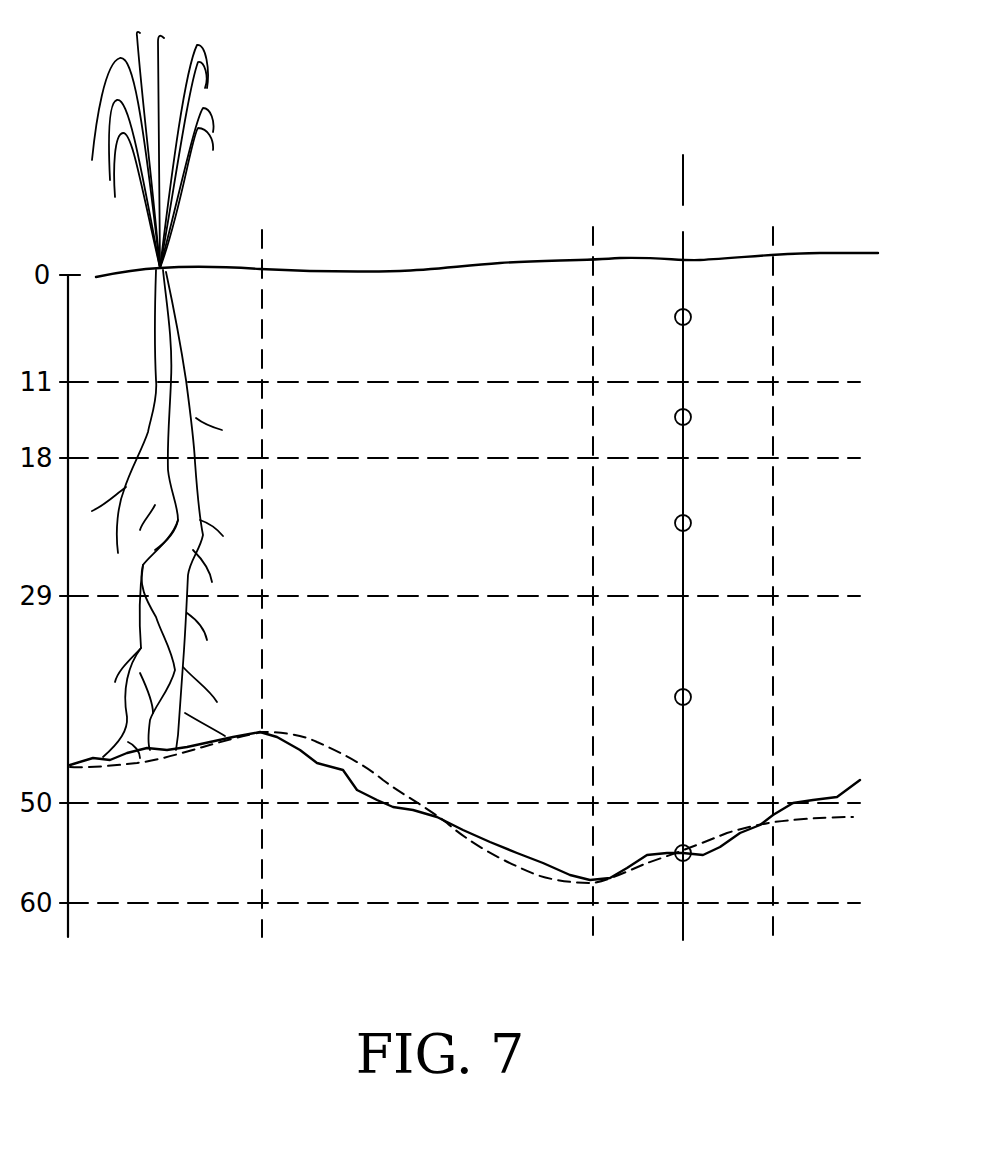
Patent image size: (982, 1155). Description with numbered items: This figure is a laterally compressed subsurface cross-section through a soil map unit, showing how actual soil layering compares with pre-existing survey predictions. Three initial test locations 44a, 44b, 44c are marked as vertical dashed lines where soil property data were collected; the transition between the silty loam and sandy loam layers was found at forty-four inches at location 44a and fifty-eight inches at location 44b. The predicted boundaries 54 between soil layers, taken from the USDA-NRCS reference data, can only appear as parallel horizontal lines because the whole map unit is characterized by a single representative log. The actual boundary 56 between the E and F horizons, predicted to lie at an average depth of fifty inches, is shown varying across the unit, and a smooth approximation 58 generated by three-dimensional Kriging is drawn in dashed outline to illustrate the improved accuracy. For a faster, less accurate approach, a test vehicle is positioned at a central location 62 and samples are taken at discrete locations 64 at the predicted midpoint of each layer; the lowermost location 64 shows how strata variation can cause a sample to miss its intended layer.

The initial test location 44a is at (262, 926).
The initial test location 44b is at (592, 245).
The initial test location 44c is at (773, 245).
The predicted boundaries 54 is at (837, 381).
The actual boundary 56 is at (422, 815).
The smooth approximation 58 is at (344, 752).
The central location 62 is at (685, 175).
The discrete locations 64 is at (692, 313).